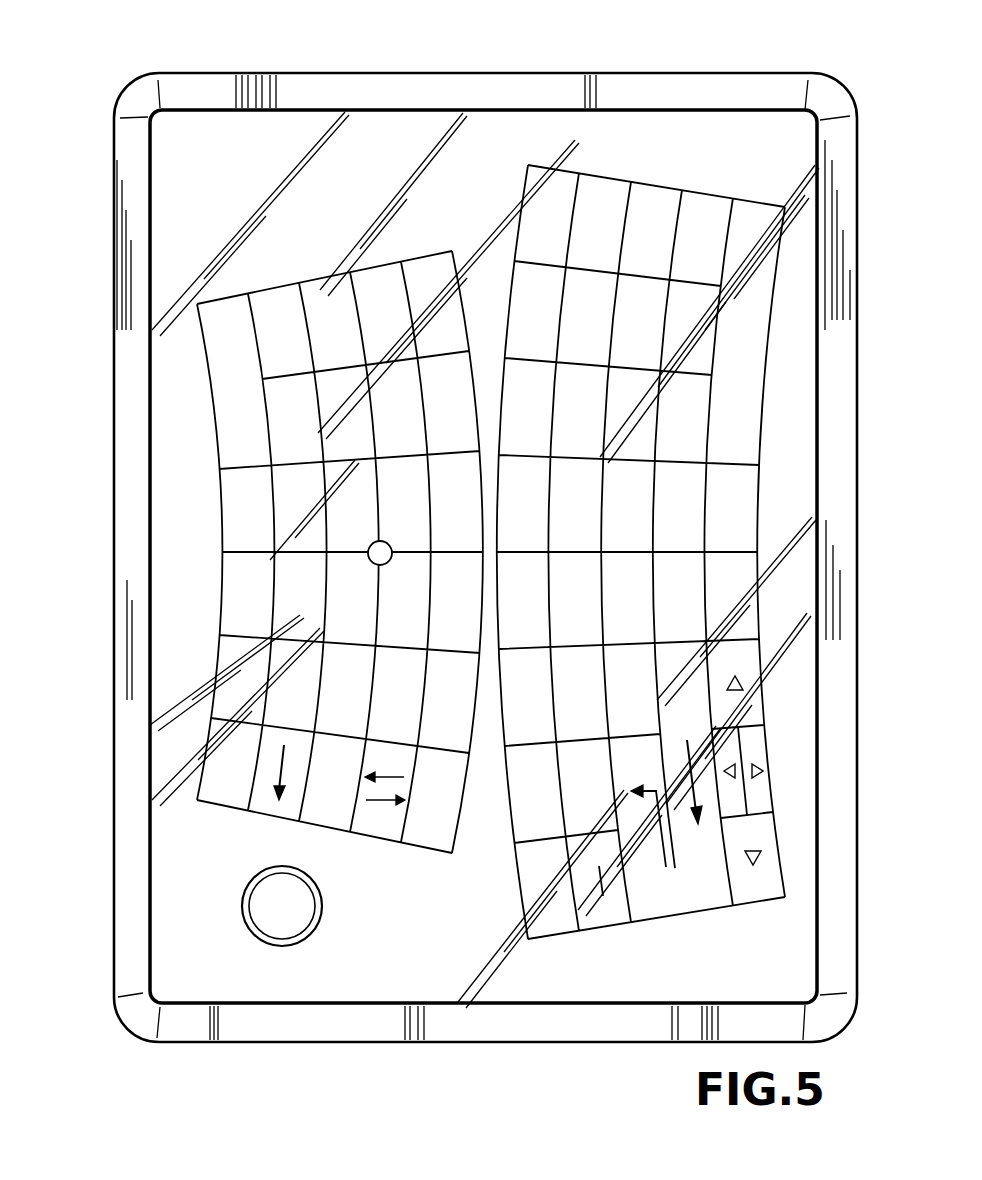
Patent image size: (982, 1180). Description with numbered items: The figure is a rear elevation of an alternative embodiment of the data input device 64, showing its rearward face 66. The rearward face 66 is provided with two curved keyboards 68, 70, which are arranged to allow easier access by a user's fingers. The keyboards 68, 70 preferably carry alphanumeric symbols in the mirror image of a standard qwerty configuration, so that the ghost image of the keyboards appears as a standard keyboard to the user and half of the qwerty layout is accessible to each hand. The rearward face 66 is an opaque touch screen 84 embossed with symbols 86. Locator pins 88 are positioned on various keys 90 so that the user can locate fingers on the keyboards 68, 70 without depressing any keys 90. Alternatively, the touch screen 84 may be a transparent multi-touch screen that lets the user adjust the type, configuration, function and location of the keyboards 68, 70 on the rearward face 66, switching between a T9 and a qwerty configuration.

The device 64 is at (331, 50).
The rearward face 66 is at (671, 133).
The curved keyboard 68 is at (321, 236).
The curved keyboard 70 is at (649, 160).
The touch screen 84 is at (188, 193).
The symbols 86 is at (233, 407).
The locator pins 88 is at (368, 556).
The keys 90 is at (293, 628).